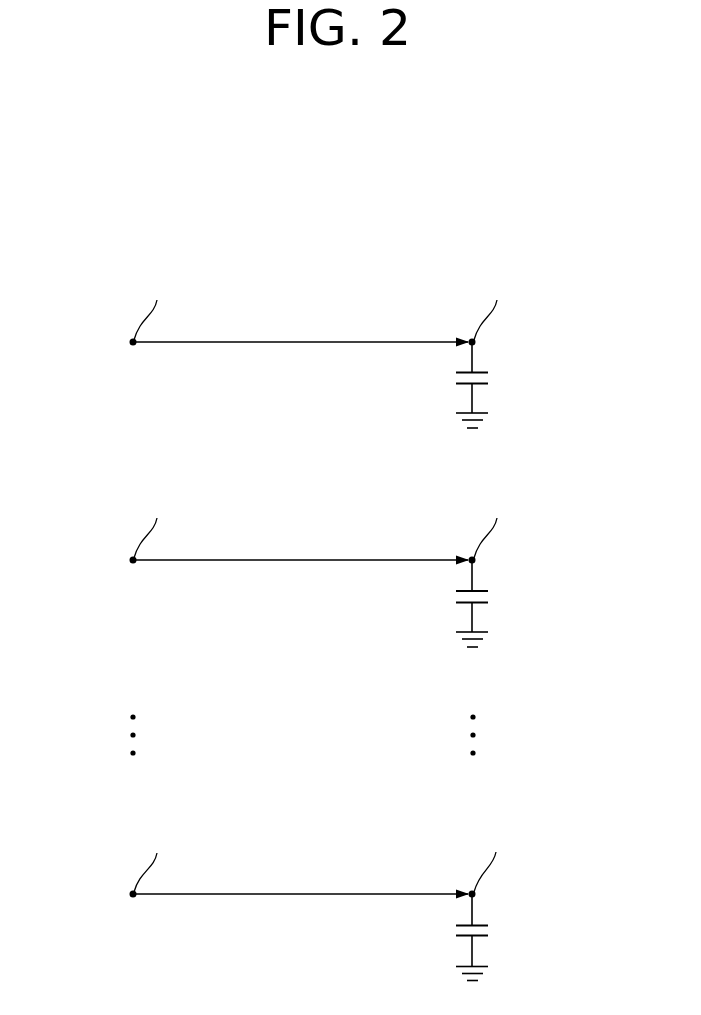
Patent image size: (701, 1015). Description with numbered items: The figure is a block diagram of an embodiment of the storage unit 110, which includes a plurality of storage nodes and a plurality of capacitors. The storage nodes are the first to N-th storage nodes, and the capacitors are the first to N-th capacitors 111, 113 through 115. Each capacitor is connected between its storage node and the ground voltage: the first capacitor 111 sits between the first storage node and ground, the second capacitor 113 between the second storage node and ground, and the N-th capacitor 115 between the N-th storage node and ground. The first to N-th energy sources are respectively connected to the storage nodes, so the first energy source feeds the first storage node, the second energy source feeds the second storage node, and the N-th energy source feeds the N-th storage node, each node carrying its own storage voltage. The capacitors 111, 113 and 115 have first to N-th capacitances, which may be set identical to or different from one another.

The storage unit 110 is at (640, 172).
The first capacitor 111 is at (425, 385).
The second capacitor 113 is at (425, 603).
The N-th capacitor 115 is at (425, 937).